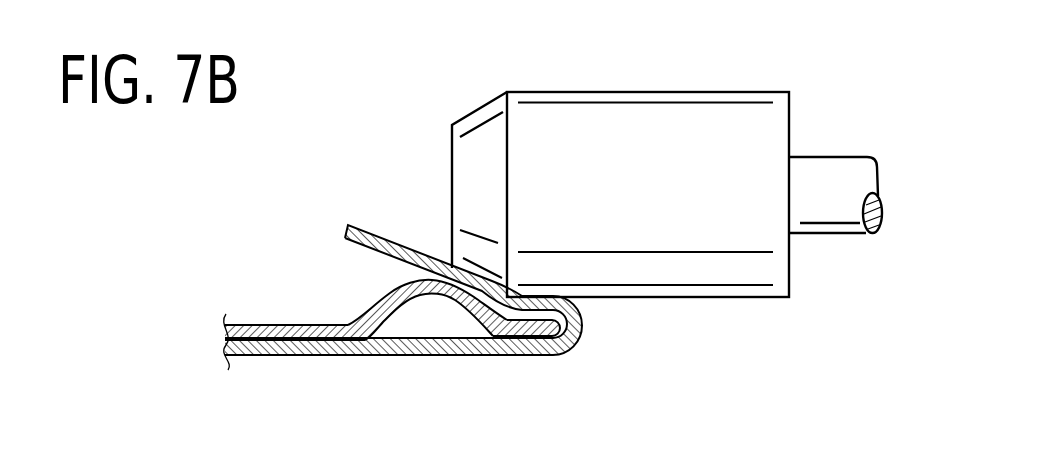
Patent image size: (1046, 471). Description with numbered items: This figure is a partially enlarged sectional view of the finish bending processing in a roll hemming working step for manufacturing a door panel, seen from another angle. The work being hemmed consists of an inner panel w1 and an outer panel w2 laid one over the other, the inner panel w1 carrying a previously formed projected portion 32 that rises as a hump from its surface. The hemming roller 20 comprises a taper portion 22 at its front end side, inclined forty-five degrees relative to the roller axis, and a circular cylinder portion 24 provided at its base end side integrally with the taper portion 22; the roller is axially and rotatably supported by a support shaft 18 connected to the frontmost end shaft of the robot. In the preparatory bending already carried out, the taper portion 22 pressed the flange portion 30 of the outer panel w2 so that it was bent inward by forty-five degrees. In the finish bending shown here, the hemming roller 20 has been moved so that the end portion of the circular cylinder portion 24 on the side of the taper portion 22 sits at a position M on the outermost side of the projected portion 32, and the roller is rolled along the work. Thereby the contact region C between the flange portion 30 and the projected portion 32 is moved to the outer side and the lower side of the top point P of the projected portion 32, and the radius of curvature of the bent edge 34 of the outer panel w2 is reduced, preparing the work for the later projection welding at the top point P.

The support shaft 18 is at (825, 166).
The hemming roller 20 is at (673, 80).
The taper portion 22 is at (483, 106).
The circular cylinder portion 24 is at (622, 92).
The flange portion 30 is at (356, 226).
The projected portion 32 is at (372, 306).
The bent edge 34 is at (584, 325).
The contact region C is at (472, 263).
The position on outermost side of projected portion M is at (492, 339).
The top point of projected portion P is at (428, 307).
The inner panel w1 is at (283, 325).
The outer panel w2 is at (272, 358).